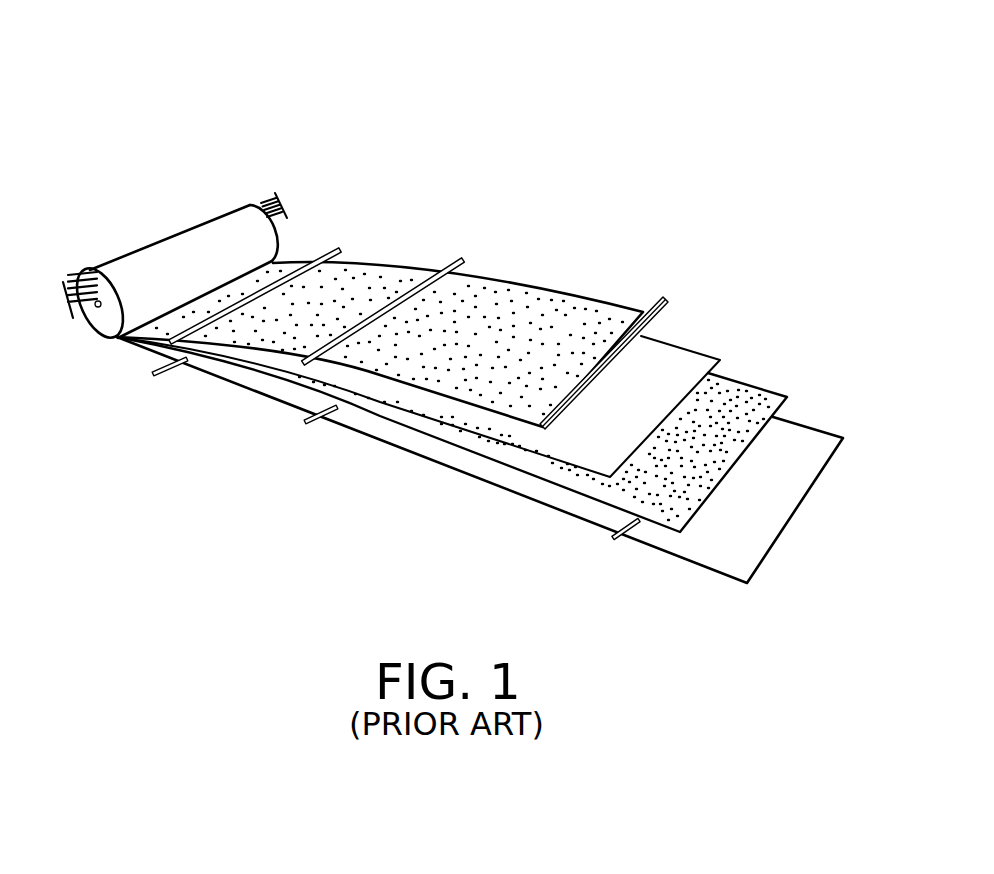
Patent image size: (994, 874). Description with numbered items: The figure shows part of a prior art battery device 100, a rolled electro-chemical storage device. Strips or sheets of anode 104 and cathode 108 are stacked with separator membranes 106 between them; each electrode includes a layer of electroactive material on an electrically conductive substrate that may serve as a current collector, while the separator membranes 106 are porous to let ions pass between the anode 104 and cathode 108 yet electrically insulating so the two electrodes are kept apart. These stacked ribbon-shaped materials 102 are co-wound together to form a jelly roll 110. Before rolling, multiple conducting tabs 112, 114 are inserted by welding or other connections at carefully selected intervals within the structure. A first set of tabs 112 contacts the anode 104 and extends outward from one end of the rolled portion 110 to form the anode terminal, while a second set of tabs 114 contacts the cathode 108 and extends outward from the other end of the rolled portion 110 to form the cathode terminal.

The battery device 100 is at (78, 36).
The ribbon-shaped materials 102 is at (640, 127).
The anode 104 is at (597, 296).
The separator membranes 106 is at (690, 347).
The cathode 108 is at (741, 378).
The jelly roll 110 is at (157, 238).
The first set of tabs 112 is at (283, 205).
The second set of tabs 114 is at (60, 285).